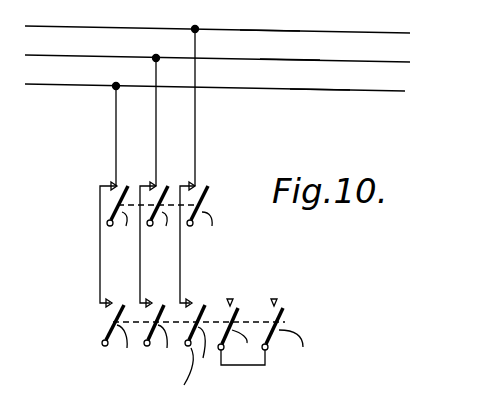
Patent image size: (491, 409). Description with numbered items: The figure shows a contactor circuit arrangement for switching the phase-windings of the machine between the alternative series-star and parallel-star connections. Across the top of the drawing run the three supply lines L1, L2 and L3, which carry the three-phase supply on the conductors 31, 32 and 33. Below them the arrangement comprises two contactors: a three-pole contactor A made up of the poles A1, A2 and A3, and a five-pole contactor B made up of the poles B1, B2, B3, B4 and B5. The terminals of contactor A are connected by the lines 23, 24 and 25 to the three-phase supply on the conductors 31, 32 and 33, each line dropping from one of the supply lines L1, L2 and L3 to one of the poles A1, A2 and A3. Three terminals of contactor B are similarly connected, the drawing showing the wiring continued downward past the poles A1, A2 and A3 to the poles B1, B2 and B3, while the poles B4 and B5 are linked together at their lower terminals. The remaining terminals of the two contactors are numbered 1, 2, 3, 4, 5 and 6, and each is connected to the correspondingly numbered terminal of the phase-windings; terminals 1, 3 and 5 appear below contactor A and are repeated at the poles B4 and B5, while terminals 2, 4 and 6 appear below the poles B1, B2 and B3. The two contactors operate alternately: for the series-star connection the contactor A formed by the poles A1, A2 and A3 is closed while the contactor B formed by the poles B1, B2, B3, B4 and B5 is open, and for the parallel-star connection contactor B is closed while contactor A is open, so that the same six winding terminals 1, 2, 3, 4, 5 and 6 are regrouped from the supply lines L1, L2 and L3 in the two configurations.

The supply line L1 is at (230, 96).
The supply line L2 is at (230, 67).
The supply line L3 is at (230, 38).
The supply conductor 31 is at (305, 91).
The supply conductor 32 is at (277, 61).
The supply conductor 33 is at (270, 24).
The line 23 is at (114, 136).
The line 24 is at (154, 136).
The line 25 is at (193, 136).
The contactor pole A1 is at (120, 219).
The contactor pole A2 is at (158, 221).
The contactor pole A3 is at (204, 220).
The contactor pole B1 is at (118, 342).
The contactor pole B2 is at (159, 344).
The contactor pole B3 is at (201, 346).
The contactor pole B4 is at (244, 338).
The contactor pole B5 is at (285, 326).
The contactor terminal 1 is at (114, 263).
The contactor terminal 2 is at (87, 360).
The contactor terminal 3 is at (155, 263).
The contactor terminal 4 is at (147, 360).
The contactor terminal 5 is at (195, 263).
The contactor terminal 6 is at (178, 397).